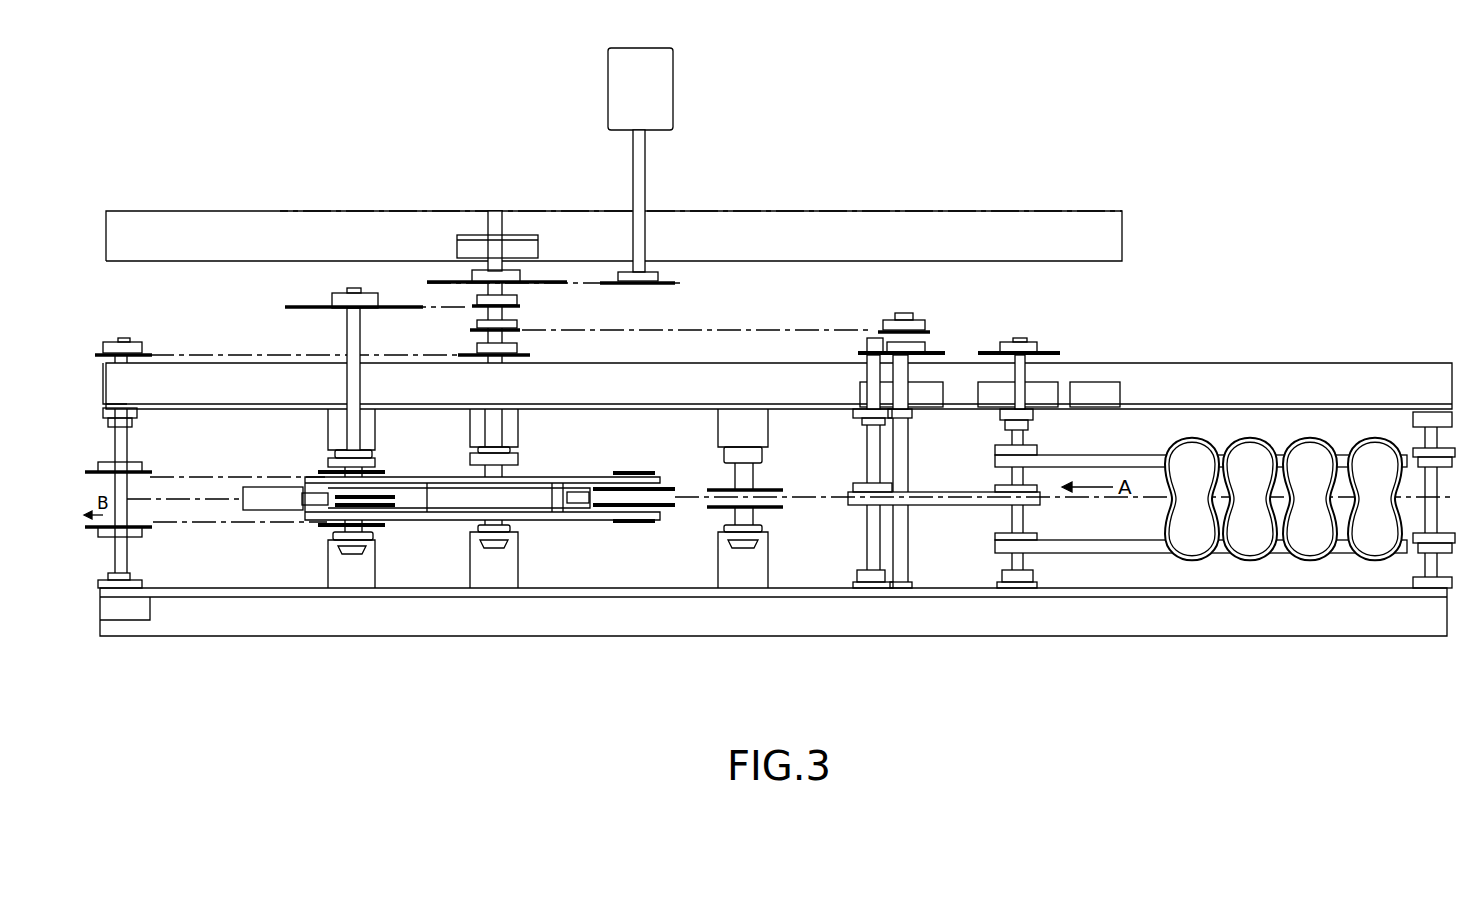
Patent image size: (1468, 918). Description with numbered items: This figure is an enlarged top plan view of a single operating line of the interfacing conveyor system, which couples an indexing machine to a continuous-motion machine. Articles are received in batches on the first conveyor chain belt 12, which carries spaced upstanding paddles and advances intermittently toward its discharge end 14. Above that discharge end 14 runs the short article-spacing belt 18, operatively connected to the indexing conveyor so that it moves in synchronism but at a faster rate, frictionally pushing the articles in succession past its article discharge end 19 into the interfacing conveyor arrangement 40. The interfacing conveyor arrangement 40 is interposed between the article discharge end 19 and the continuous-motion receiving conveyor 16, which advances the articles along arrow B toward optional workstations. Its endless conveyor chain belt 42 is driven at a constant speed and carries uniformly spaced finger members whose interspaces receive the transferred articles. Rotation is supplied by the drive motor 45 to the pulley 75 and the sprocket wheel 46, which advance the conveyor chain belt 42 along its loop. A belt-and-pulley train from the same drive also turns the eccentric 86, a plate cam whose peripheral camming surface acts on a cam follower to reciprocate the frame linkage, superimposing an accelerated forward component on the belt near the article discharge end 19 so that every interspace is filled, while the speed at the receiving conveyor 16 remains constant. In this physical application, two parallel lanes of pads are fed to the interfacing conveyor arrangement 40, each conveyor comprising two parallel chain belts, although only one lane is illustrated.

The first conveyor chain belt 12 is at (1120, 543).
The discharge end 14 is at (995, 532).
The receiving conveyor 16 is at (173, 522).
The article-spacing belt 18 is at (938, 506).
The article discharge end 19 is at (848, 498).
The interfacing conveyor arrangement 40 is at (482, 555).
The endless conveyor chain belt 42 is at (602, 521).
The drive motor 45 is at (673, 76).
The sprocket wheel 46 is at (307, 306).
The pulley 75 is at (320, 490).
The eccentric 86 is at (520, 508).